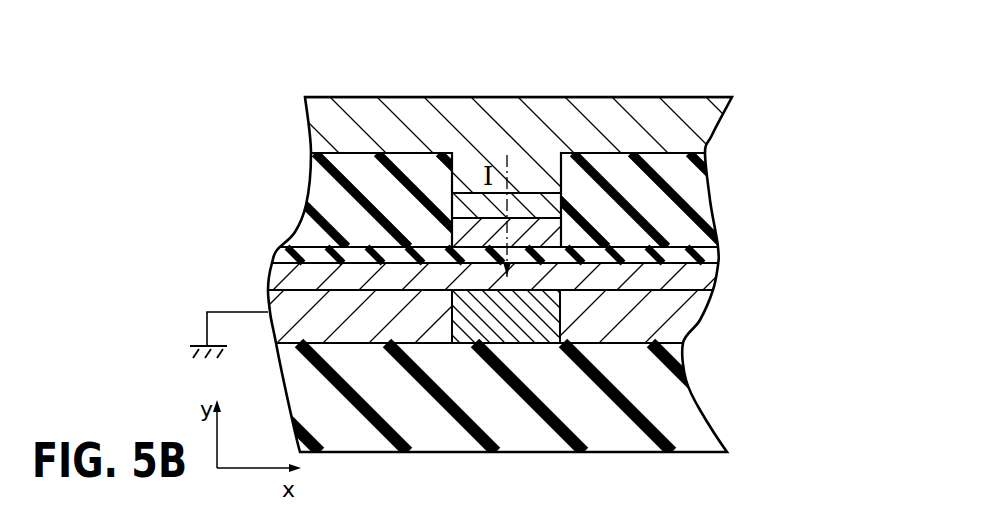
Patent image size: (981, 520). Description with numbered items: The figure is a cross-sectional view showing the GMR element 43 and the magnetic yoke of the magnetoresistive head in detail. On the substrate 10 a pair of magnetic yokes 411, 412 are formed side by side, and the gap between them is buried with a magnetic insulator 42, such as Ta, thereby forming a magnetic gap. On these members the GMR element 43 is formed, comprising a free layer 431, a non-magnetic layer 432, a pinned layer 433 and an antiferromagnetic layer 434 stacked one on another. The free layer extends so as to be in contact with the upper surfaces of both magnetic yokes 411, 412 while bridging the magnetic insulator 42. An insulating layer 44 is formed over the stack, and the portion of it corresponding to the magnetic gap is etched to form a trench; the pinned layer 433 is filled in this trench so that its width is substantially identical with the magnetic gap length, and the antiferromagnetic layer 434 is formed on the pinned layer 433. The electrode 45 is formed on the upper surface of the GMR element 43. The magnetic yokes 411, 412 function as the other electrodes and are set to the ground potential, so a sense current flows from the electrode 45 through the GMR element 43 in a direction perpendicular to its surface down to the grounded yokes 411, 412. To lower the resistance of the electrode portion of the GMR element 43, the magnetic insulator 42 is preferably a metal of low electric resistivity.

The substrate 10 is at (300, 411).
The electrode 45 is at (482, 107).
The insulating layer 44 is at (366, 172).
The GMR element 43 is at (562, 242).
The antiferromagnetic layer 434 is at (550, 207).
The pinned layer 433 is at (552, 237).
The non-magnetic layer 432 is at (705, 256).
The free layer 431 is at (526, 284).
The magnetic yoke 412 is at (688, 322).
The magnetic yoke 411 is at (278, 305).
The magnetic insulator 42 is at (528, 342).